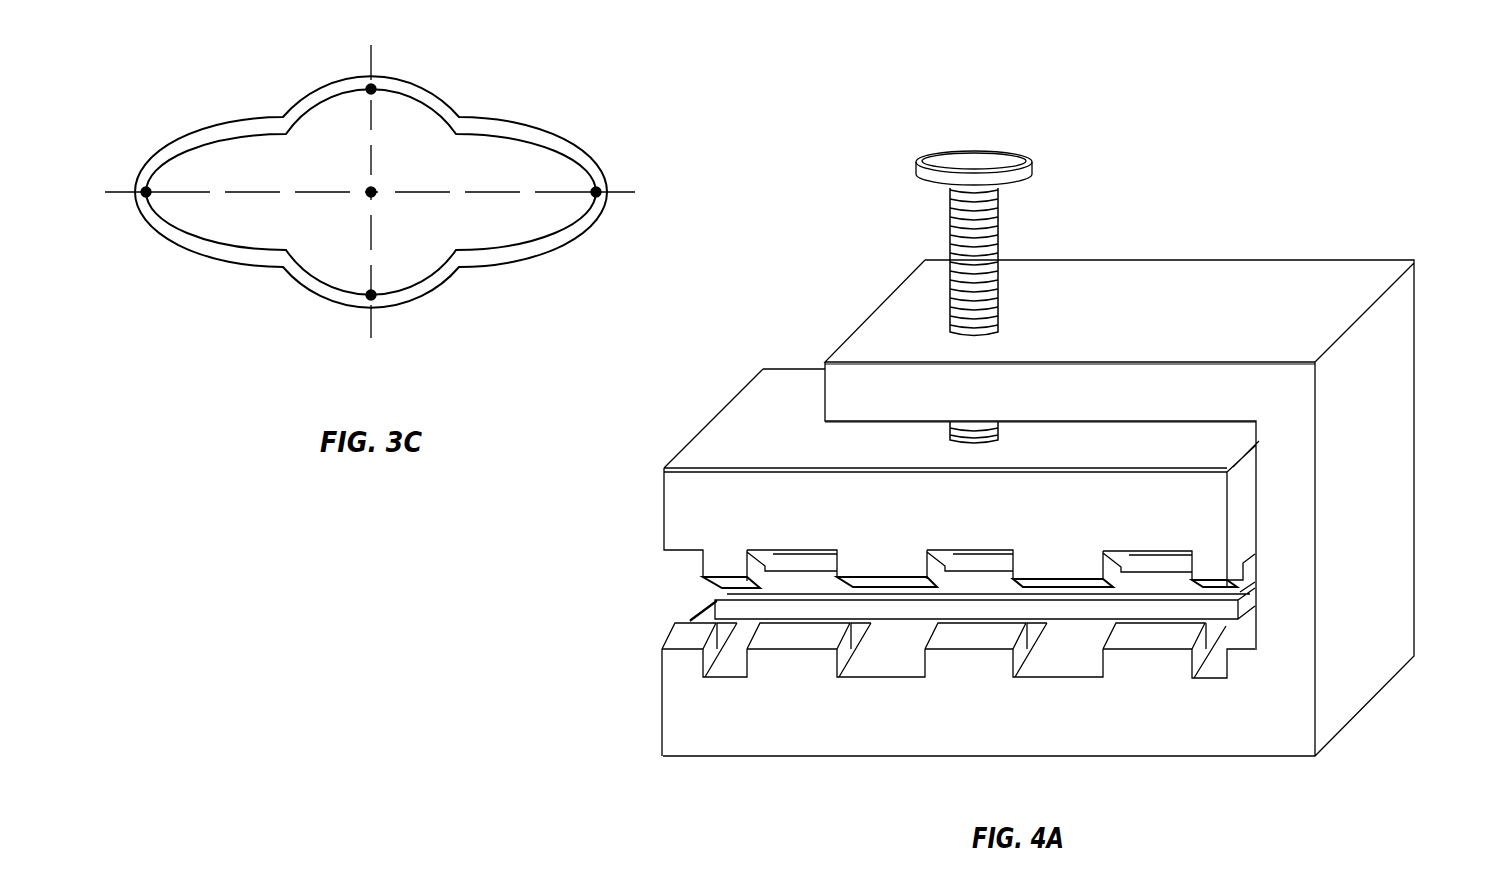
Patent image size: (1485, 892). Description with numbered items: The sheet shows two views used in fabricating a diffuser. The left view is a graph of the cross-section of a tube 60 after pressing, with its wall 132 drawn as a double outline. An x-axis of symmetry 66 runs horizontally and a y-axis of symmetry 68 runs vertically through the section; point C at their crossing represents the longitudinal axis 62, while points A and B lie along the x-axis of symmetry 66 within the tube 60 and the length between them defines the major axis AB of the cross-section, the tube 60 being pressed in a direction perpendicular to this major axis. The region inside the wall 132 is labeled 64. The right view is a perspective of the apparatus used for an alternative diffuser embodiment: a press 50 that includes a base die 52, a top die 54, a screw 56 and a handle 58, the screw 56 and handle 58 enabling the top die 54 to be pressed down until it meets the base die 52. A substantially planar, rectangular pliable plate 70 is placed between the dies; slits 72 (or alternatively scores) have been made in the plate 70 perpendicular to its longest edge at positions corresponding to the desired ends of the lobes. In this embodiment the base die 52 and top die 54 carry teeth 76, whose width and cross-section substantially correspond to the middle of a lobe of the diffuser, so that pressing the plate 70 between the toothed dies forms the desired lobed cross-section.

In FIG. 4A, the press 50 is at (1296, 468).
In FIG. 4A, the base die 52 is at (677, 718).
In FIG. 4A, the top die 54 is at (737, 423).
In FIG. 4A, the screw 56 is at (950, 243).
In FIG. 4A, the handle 58 is at (916, 169).
In FIG. 3C, the tube 60 is at (485, 100).
In FIG. 3C, the longitudinal axis 62 is at (367, 196).
In FIG. 3C, the inner lumen 64 is at (276, 222).
In FIG. 3C, the x-axis of symmetry 66 is at (625, 191).
In FIG. 3C, the y-axis of symmetry 68 is at (370, 322).
In FIG. 4A, the plate 70 is at (715, 594).
In FIG. 4A, the slits 72 is at (1123, 573).
In FIG. 4A, the teeth 76 is at (873, 556).
In FIG. 3C, the wall 132 is at (194, 132).